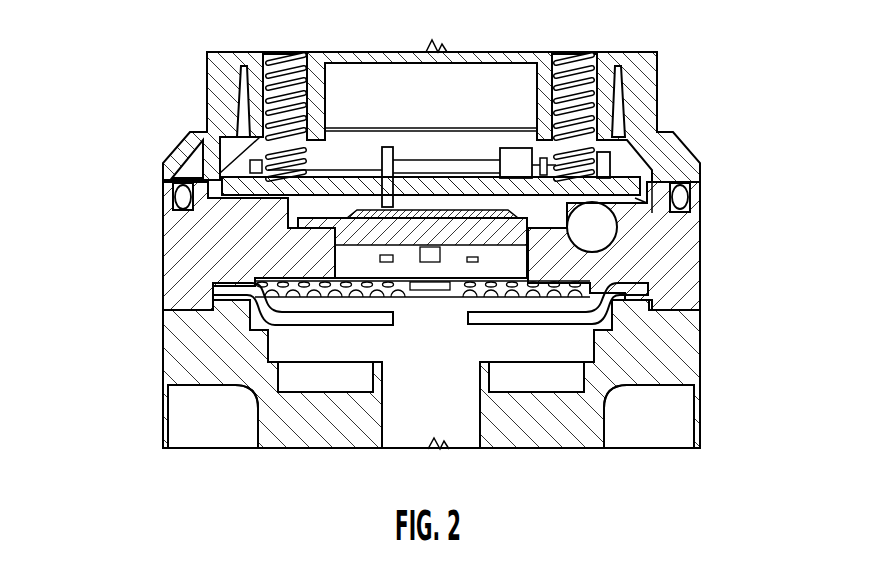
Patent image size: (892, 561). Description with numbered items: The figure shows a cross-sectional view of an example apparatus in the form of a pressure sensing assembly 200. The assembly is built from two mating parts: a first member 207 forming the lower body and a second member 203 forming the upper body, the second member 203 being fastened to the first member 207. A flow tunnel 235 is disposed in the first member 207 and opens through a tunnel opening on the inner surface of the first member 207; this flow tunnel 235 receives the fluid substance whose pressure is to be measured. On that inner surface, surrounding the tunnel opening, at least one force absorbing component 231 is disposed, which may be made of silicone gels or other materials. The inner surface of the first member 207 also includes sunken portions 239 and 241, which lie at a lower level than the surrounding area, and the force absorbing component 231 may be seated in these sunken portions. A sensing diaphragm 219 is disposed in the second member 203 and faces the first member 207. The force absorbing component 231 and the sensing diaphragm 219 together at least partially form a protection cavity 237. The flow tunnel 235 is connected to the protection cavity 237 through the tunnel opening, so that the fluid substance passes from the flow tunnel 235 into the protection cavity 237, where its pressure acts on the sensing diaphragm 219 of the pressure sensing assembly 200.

The pressure sensing assembly 200 is at (176, 99).
The second member 203 is at (278, 257).
The first member 207 is at (195, 366).
The sensing diaphragm 219 is at (268, 305).
The force absorbing component 231 is at (496, 383).
The flow tunnel 235 is at (457, 432).
The protection cavity 237 is at (567, 345).
The sunken portion 239 is at (300, 395).
The sunken portion 241 is at (537, 393).